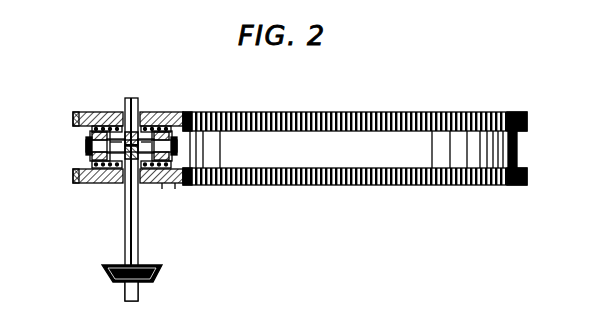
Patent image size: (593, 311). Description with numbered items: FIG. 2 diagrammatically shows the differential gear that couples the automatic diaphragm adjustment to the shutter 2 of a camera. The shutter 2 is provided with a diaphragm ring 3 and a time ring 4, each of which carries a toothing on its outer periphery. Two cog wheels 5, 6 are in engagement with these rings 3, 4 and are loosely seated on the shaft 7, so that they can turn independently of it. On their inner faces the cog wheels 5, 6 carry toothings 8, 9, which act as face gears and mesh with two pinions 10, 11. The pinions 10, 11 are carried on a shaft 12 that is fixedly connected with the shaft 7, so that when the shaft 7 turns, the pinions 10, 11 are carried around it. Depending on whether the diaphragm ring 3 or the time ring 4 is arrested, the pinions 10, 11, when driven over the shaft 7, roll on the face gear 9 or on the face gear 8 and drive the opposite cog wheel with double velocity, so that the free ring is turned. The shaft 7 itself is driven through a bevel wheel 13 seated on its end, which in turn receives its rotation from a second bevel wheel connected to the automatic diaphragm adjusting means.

The shutter 2 is at (355, 147).
The diaphragm ring 3 is at (460, 117).
The time ring 4 is at (470, 184).
The cog wheel 5 is at (95, 183).
The cog wheel 6 is at (102, 112).
The shaft 7 is at (135, 234).
The toothing 8 is at (76, 162).
The toothing 9 is at (92, 133).
The pinion 10 is at (85, 142).
The pinion 11 is at (167, 184).
The shaft 12 is at (145, 145).
The bevel wheel 13 is at (160, 268).